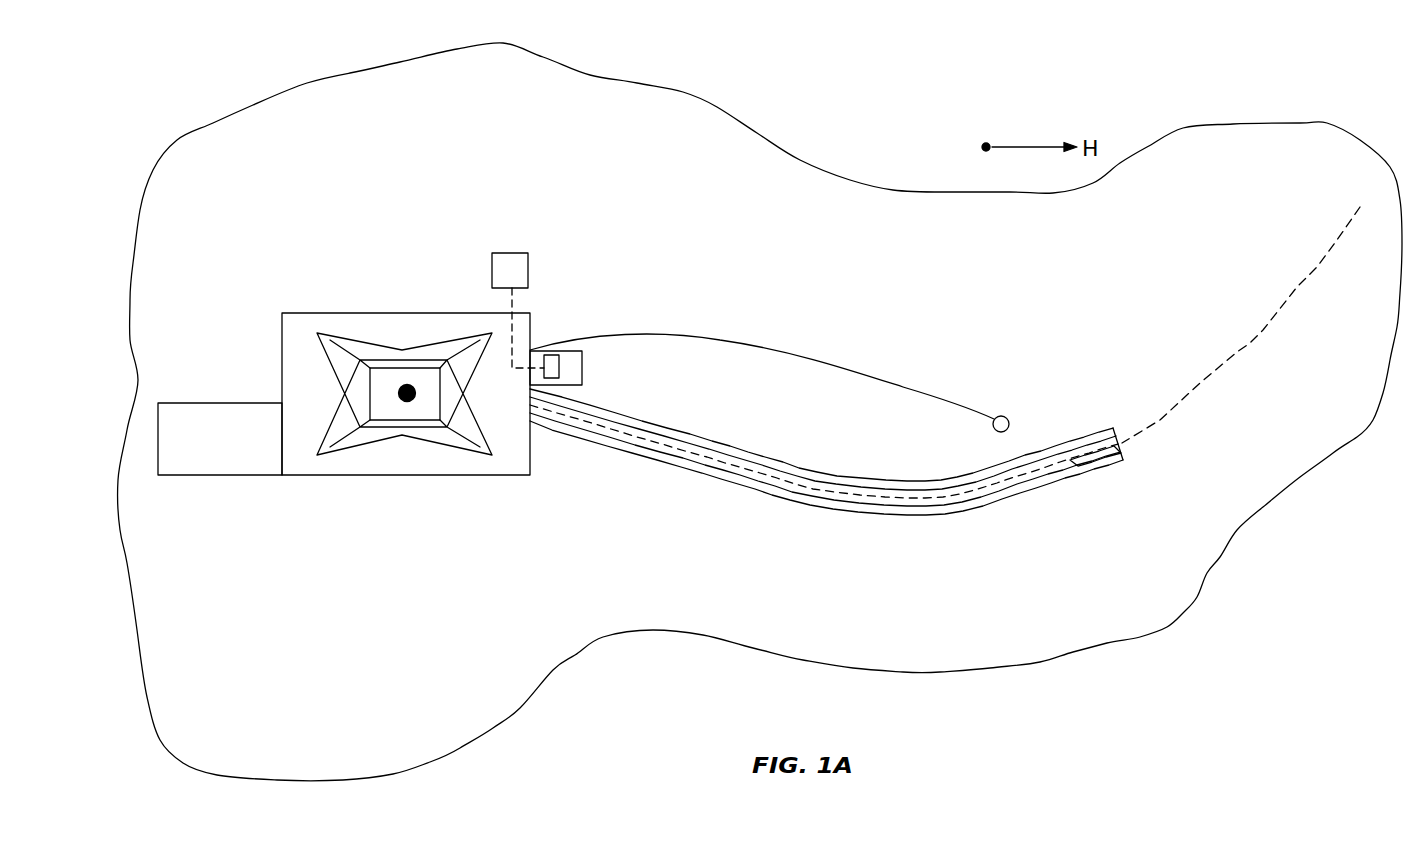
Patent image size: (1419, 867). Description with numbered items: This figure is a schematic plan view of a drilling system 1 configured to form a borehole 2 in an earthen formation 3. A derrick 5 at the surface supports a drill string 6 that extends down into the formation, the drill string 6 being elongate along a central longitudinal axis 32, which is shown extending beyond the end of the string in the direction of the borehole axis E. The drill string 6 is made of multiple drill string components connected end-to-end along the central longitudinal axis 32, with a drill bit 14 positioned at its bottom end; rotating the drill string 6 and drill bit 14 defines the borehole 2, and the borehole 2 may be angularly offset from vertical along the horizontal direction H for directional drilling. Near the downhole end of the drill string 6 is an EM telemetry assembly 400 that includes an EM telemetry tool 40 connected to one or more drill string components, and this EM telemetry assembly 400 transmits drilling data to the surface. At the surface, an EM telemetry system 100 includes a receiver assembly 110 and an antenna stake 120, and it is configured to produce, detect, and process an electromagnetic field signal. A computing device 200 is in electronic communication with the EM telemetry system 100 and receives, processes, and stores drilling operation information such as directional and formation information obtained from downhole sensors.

The drilling system 1 is at (344, 368).
The borehole 2 is at (857, 489).
The earthen formation 3 is at (487, 594).
The derrick 5 is at (325, 384).
The drill string 6 is at (708, 450).
The drill bit 14 is at (1122, 458).
The central longitudinal axis 32 is at (1237, 355).
The EM telemetry tool 40 is at (1088, 473).
The EM telemetry system 100 is at (537, 301).
The receiver assembly 110 is at (552, 364).
The antenna stake 120 is at (1018, 408).
The computing device 200 is at (507, 262).
The EM telemetry assembly 400 is at (1108, 509).